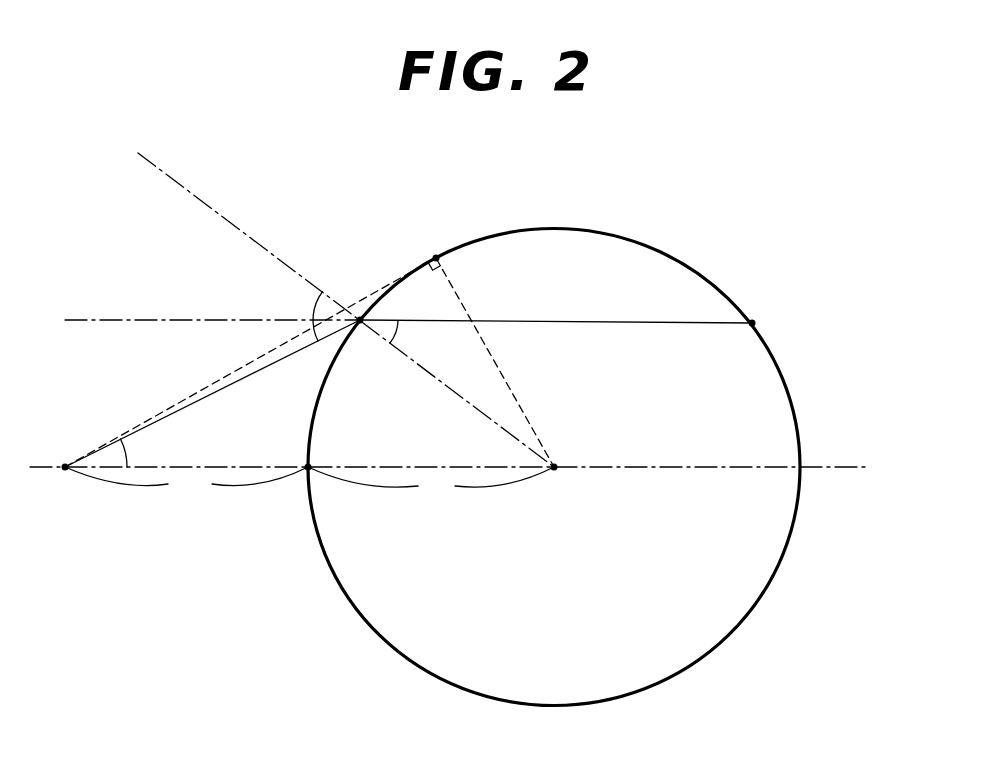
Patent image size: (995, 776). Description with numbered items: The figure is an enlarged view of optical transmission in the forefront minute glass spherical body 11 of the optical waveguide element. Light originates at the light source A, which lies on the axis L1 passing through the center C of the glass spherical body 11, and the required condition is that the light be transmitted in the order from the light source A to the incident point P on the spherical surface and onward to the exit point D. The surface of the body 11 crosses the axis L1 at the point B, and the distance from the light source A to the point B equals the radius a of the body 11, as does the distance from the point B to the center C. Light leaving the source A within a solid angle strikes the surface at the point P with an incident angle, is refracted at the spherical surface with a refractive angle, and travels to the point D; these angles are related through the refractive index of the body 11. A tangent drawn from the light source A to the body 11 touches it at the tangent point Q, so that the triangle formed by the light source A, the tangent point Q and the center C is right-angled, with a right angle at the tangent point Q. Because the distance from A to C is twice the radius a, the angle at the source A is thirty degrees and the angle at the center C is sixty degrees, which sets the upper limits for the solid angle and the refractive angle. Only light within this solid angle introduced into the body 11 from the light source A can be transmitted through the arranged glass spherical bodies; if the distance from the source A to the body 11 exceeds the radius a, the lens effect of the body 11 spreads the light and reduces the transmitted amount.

The minute glass spherical body 11 is at (516, 255).
The optical axis L1 is at (843, 467).
The light source A is at (64, 485).
The point B (vertex of optical element on axis) B is at (308, 467).
The center of the minute glass spherical body C is at (566, 485).
The exit point of the light D is at (767, 326).
The incident point of the light P is at (360, 318).
The tangent point Q is at (436, 256).
The radius a is at (309, 483).